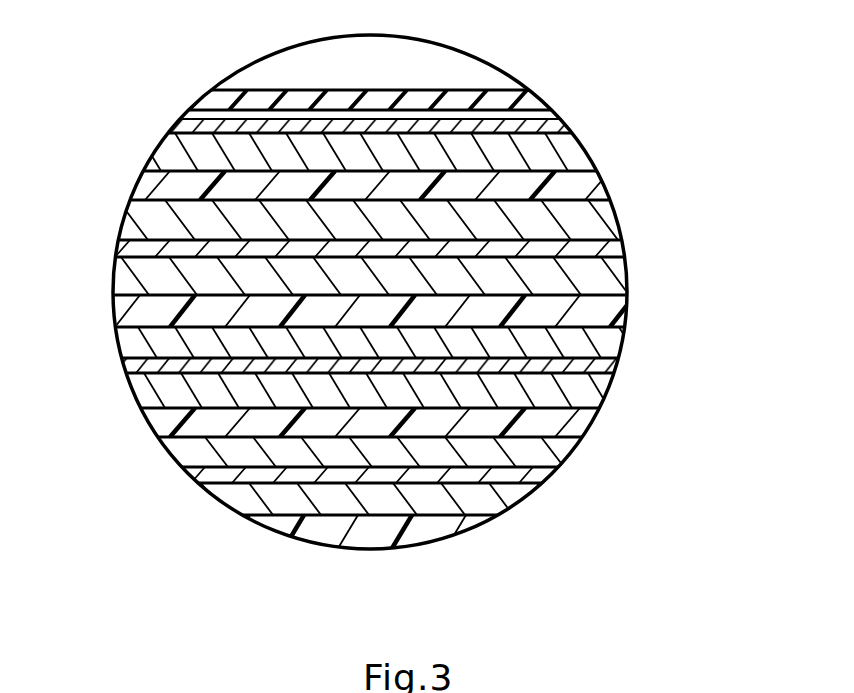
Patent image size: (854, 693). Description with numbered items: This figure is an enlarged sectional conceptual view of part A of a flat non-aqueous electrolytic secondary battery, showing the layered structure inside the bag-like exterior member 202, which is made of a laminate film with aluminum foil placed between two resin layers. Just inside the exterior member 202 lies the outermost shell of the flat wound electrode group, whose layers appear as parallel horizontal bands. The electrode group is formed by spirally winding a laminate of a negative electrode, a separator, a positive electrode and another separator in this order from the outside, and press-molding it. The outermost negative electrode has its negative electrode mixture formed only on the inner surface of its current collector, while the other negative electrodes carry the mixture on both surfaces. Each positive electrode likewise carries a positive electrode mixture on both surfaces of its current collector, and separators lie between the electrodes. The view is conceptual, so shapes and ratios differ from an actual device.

The part A is at (247, 78).
The bag-like exterior member 202 is at (523, 97).